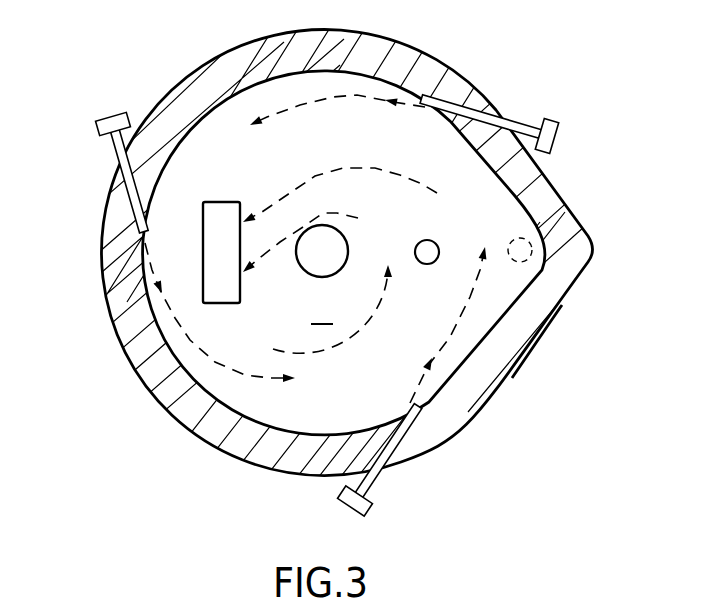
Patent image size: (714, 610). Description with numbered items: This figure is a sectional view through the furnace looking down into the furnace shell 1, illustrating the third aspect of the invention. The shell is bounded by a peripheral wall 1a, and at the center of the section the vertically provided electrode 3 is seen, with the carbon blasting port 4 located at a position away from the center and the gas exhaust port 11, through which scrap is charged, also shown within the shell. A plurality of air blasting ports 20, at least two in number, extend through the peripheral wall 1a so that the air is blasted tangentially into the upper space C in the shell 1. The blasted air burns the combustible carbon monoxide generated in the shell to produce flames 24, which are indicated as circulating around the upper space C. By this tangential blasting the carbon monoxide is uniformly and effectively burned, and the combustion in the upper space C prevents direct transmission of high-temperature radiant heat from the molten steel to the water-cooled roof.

The furnace shell 1 is at (556, 203).
The peripheral wall 1a is at (512, 377).
The electrode 3 is at (347, 247).
The carbon blasting port 4 is at (431, 241).
The gas exhaust port 11 is at (220, 303).
The air blasting ports 20 is at (102, 118).
The flames 24 is at (328, 98).
The upper space C is at (322, 310).